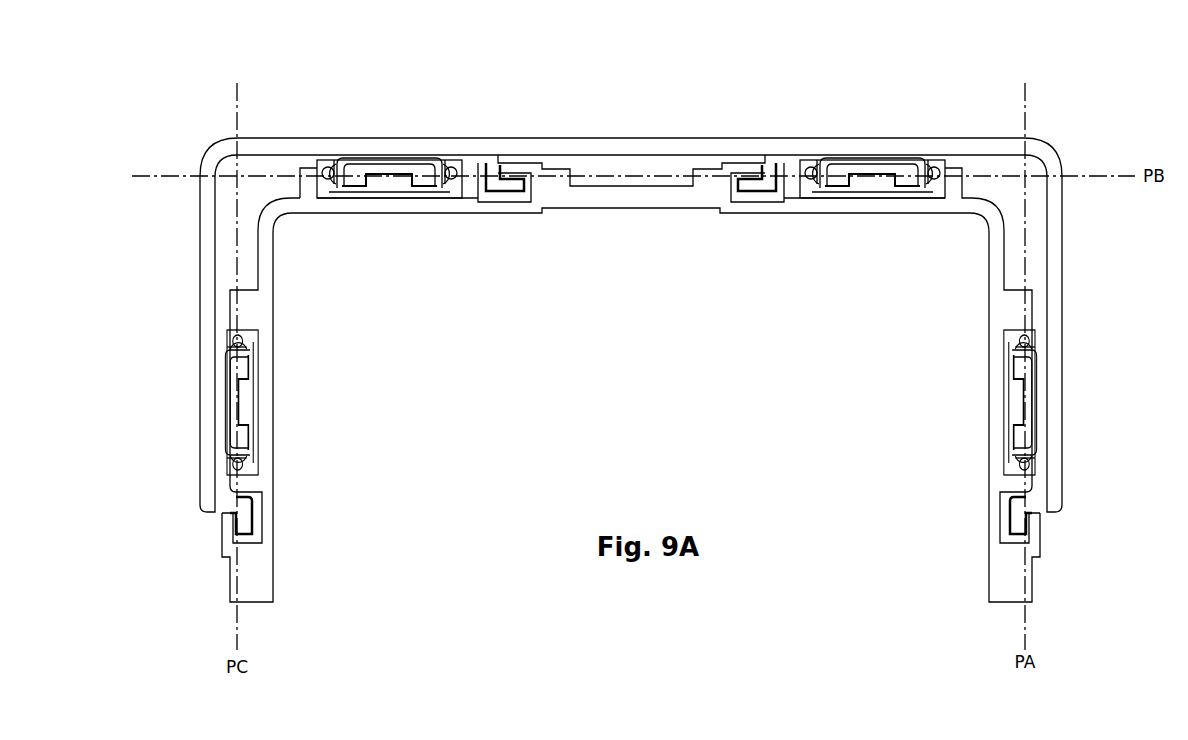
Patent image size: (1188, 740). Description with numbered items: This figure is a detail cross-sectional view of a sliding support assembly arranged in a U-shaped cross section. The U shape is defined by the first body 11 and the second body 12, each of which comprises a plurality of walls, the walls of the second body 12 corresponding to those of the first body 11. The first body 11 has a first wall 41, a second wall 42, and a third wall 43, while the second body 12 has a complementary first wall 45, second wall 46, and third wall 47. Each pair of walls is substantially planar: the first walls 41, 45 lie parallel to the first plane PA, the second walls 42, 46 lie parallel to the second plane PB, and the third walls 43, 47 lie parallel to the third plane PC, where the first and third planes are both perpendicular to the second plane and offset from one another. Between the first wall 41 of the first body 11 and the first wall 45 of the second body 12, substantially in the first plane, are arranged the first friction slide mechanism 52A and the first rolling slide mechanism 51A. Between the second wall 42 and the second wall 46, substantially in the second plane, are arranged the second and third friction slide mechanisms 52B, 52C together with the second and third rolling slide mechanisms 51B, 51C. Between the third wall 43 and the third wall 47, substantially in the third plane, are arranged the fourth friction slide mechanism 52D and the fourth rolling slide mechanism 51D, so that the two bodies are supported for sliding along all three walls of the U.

The first body 11 is at (287, 220).
The second body 12 is at (212, 149).
The first wall of the first body 41 is at (988, 421).
The second wall of the first body 42 is at (622, 209).
The third wall of the first body 43 is at (275, 420).
The first wall of the second body 45 is at (1062, 247).
The second wall of the second body 46 is at (622, 137).
The third wall of the second body 47 is at (200, 233).
The first rolling slide mechanism 51A is at (1030, 405).
The second rolling slide mechanism 51B is at (870, 168).
The third rolling slide mechanism 51C is at (390, 171).
The fourth rolling slide mechanism 51D is at (235, 397).
The first friction slide mechanism 52A is at (998, 527).
The second friction slide mechanism 52B is at (763, 203).
The third friction slide mechanism 52C is at (493, 203).
The fourth friction slide mechanism 52D is at (268, 527).